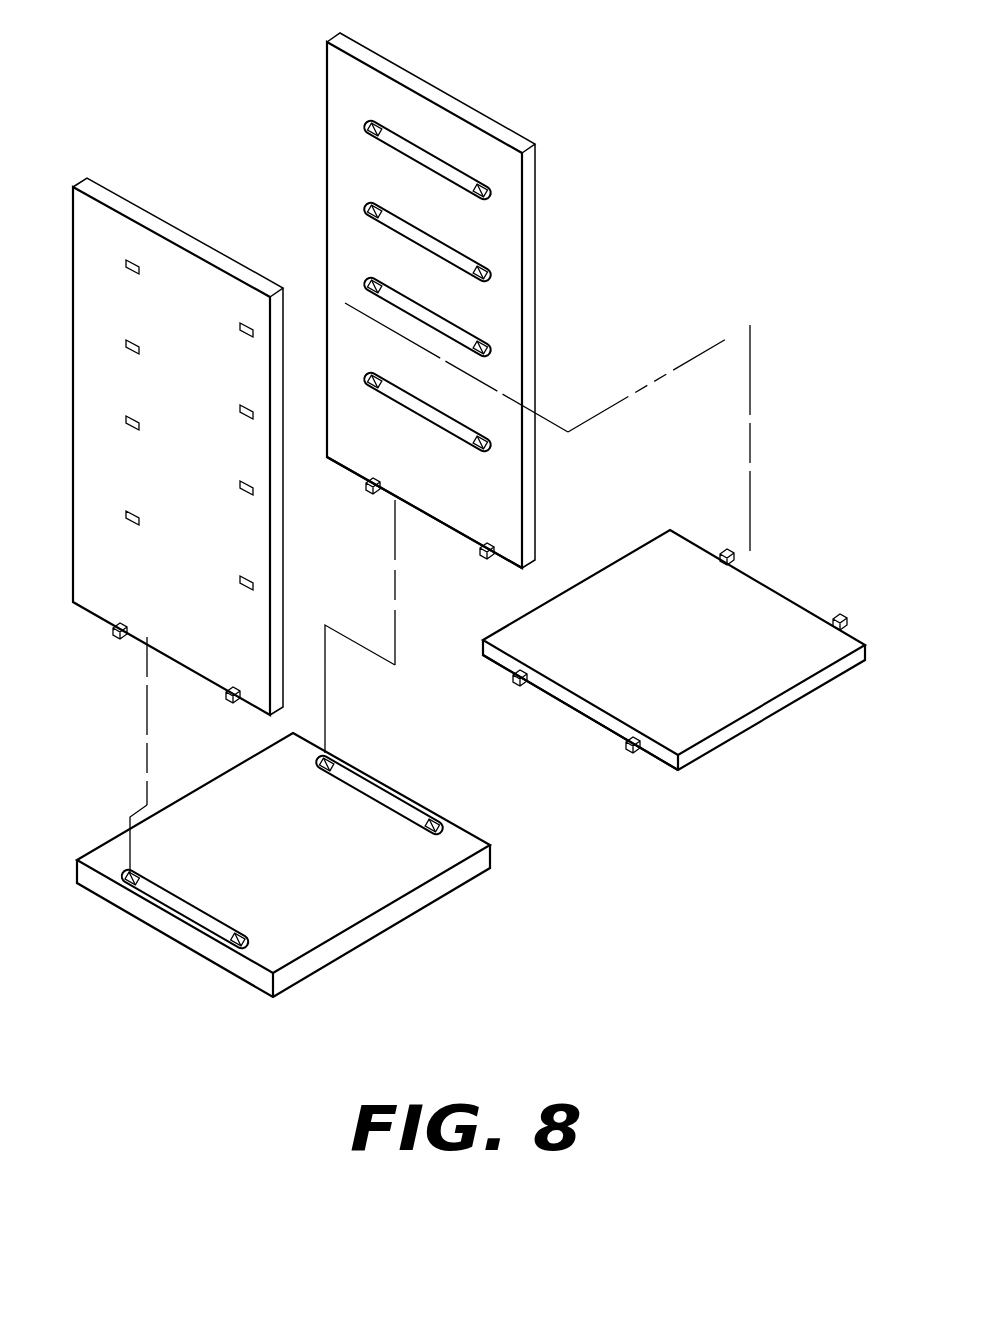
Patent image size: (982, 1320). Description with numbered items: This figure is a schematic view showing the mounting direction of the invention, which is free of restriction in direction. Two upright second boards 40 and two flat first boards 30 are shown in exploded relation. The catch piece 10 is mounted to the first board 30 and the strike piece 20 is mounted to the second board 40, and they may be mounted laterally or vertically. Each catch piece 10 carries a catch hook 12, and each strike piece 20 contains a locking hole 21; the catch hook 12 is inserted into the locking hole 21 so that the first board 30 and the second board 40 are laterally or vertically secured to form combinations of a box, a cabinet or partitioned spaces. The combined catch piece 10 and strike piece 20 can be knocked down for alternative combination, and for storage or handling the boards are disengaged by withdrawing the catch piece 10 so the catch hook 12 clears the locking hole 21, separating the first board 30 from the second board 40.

The catch piece 10 is at (541, 557).
The catch hook 12 is at (483, 556).
The strike piece 20 is at (400, 233).
The locking hole 21 is at (487, 455).
The first board 30 is at (781, 606).
The second board 40 is at (120, 218).